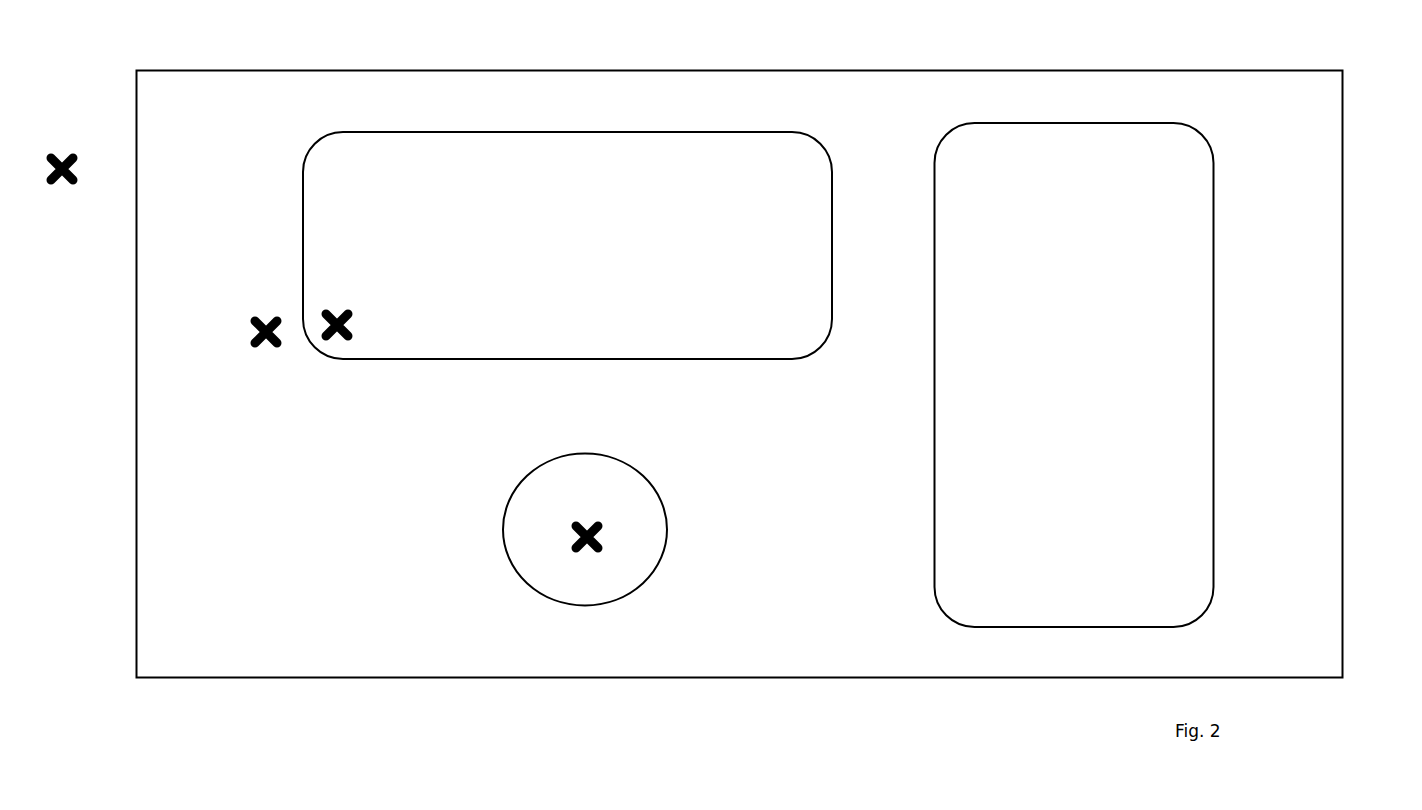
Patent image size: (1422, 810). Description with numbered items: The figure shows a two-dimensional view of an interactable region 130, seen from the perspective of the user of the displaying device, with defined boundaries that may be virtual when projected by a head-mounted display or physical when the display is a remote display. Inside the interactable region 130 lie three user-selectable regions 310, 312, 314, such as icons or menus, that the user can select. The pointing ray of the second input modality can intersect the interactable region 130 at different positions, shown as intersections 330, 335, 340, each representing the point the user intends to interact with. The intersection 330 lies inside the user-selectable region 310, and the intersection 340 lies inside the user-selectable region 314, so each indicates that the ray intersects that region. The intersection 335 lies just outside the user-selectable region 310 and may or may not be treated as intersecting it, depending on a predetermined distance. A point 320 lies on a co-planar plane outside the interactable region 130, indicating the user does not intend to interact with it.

The interactable region 130 is at (1343, 88).
The user-selectable region 310 is at (832, 160).
The user-selectable region 312 is at (1213, 207).
The user-selectable region 314 is at (658, 490).
The point outside of the interactable region 320 is at (63, 184).
The intersection 330 is at (337, 338).
The intersection 335 is at (266, 345).
The intersection 340 is at (600, 540).